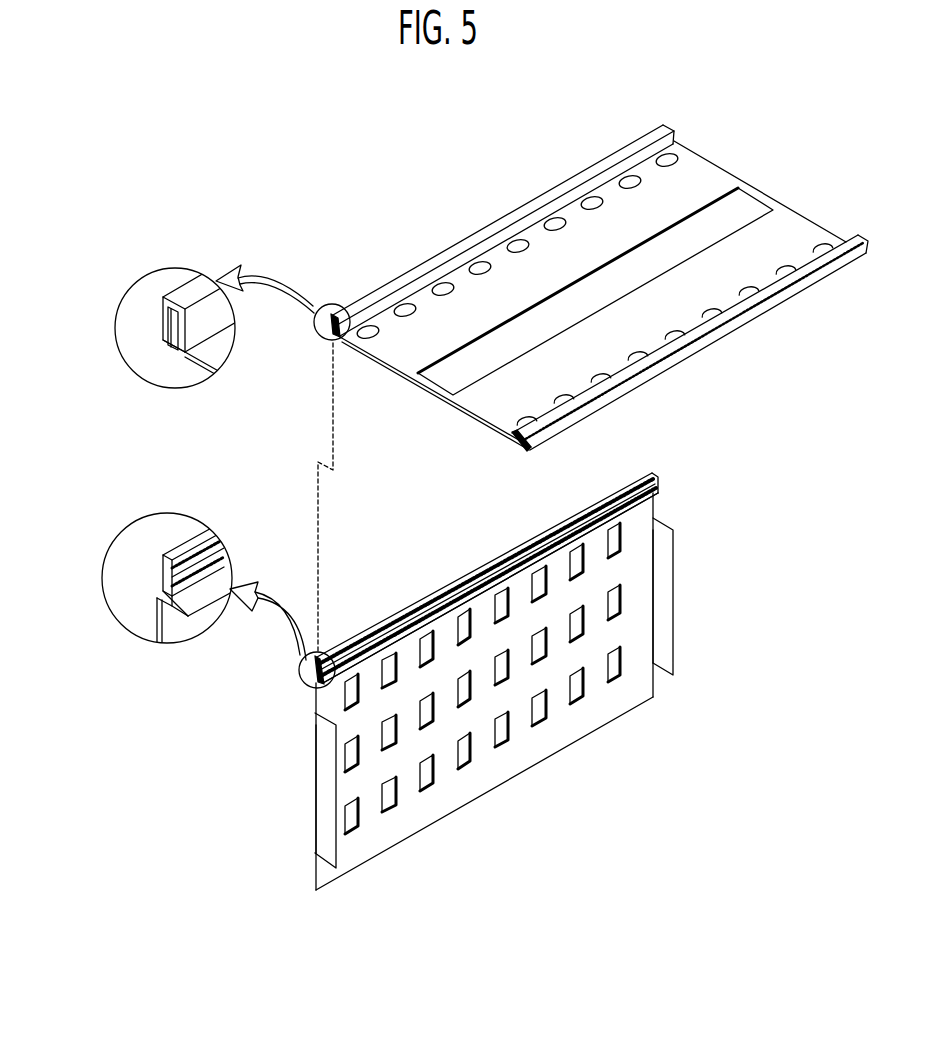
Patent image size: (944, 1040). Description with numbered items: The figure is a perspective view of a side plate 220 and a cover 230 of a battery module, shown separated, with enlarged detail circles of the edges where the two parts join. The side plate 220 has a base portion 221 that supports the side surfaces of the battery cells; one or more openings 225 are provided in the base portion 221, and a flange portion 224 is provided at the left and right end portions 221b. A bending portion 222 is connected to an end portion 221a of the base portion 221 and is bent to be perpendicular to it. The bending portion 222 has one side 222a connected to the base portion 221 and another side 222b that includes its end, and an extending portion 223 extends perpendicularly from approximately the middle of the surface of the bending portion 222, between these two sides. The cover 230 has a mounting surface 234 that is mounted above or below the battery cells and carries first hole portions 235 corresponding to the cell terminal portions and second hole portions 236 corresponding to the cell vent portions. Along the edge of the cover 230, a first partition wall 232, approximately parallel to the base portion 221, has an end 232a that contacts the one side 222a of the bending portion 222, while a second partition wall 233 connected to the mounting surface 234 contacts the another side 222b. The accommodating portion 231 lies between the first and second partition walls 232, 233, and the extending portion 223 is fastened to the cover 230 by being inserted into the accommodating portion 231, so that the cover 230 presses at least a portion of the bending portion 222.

The side plate 220 is at (394, 680).
The base portion 221 is at (434, 680).
The end portion 221a is at (403, 612).
The left and right end portions 221b is at (660, 597).
The bending portion 222 is at (136, 638).
The one side of the bending portion 222a is at (152, 594).
The another side of the bending portion 222b is at (157, 603).
The extending portion 223 is at (483, 566).
The flange portion 224 is at (660, 530).
The openings 225 is at (543, 569).
The cover 230 is at (467, 384).
The accommodating portion 231 is at (160, 348).
The first partition wall 232 is at (163, 313).
The end of the first partition wall 232a is at (172, 347).
The second partition wall 233 is at (375, 306).
The mounting surface 234 is at (703, 182).
The first hole portions 235 is at (622, 178).
The second hole portions 236 is at (726, 209).